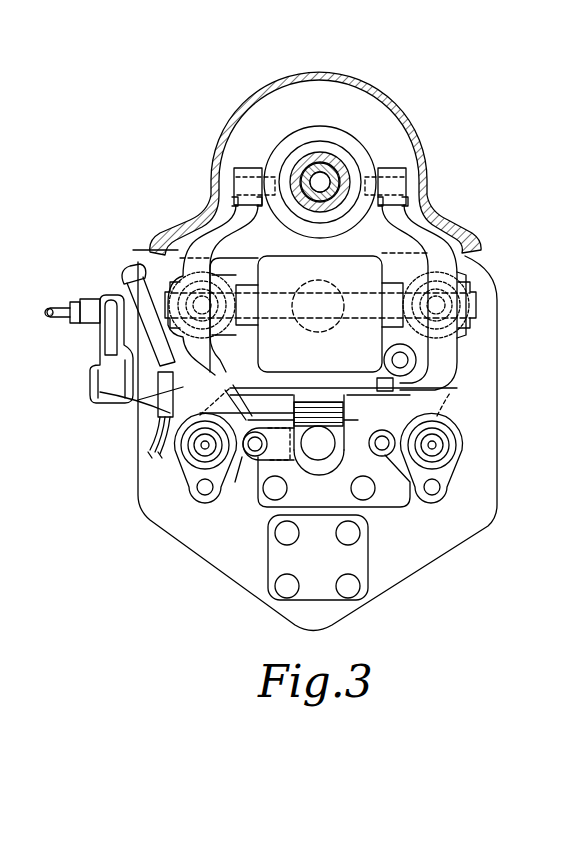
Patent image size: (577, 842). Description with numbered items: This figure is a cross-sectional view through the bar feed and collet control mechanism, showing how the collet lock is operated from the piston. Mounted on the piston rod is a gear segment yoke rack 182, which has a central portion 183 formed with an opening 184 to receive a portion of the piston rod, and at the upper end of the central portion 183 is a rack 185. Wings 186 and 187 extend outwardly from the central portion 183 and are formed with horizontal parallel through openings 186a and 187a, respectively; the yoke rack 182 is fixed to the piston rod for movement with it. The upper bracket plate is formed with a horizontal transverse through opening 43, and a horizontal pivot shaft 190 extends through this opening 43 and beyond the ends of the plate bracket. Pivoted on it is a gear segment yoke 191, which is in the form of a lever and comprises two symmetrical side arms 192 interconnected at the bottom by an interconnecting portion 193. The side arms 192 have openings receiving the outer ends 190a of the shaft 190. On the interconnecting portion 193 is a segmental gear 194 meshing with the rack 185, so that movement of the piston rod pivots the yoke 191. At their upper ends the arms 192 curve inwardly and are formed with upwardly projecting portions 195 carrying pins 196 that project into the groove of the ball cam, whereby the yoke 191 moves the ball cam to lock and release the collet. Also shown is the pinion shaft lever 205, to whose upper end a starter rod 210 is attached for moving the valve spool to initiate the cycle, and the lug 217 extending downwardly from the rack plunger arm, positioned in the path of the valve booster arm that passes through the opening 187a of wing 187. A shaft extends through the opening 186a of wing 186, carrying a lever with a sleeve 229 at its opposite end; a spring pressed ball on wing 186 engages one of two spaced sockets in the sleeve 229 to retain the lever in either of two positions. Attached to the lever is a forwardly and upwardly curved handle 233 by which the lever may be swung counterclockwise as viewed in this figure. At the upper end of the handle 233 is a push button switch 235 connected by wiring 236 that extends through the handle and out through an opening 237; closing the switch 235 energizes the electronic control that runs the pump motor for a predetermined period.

The upwardly projecting portion 195 is at (244, 167).
The pin 196 is at (233, 185).
The outer end of pivot shaft 190a is at (185, 258).
The push button switch 235 is at (126, 271).
The starter rod 210 is at (64, 306).
The pinion shaft lever 205 is at (108, 338).
The handle 233 is at (158, 352).
The side arm 192 is at (177, 377).
The opening 237 is at (150, 448).
The wiring 236 is at (146, 460).
The through opening 186a is at (204, 500).
The sleeve 229 is at (243, 456).
The wing 186 is at (265, 460).
The gear segment yoke rack 182 is at (307, 477).
The opening 184 is at (297, 416).
The segmental gear 194 is at (302, 400).
The rack 185 is at (316, 430).
The lug 217 is at (377, 378).
The horizontal transverse through opening 43 is at (354, 294).
The pivot shaft 190 is at (273, 295).
The gear segment yoke 191 is at (467, 259).
The interconnecting portion 193 is at (447, 385).
The central portion 183 is at (335, 460).
The wing 187 is at (381, 457).
The through opening 187a is at (415, 488).